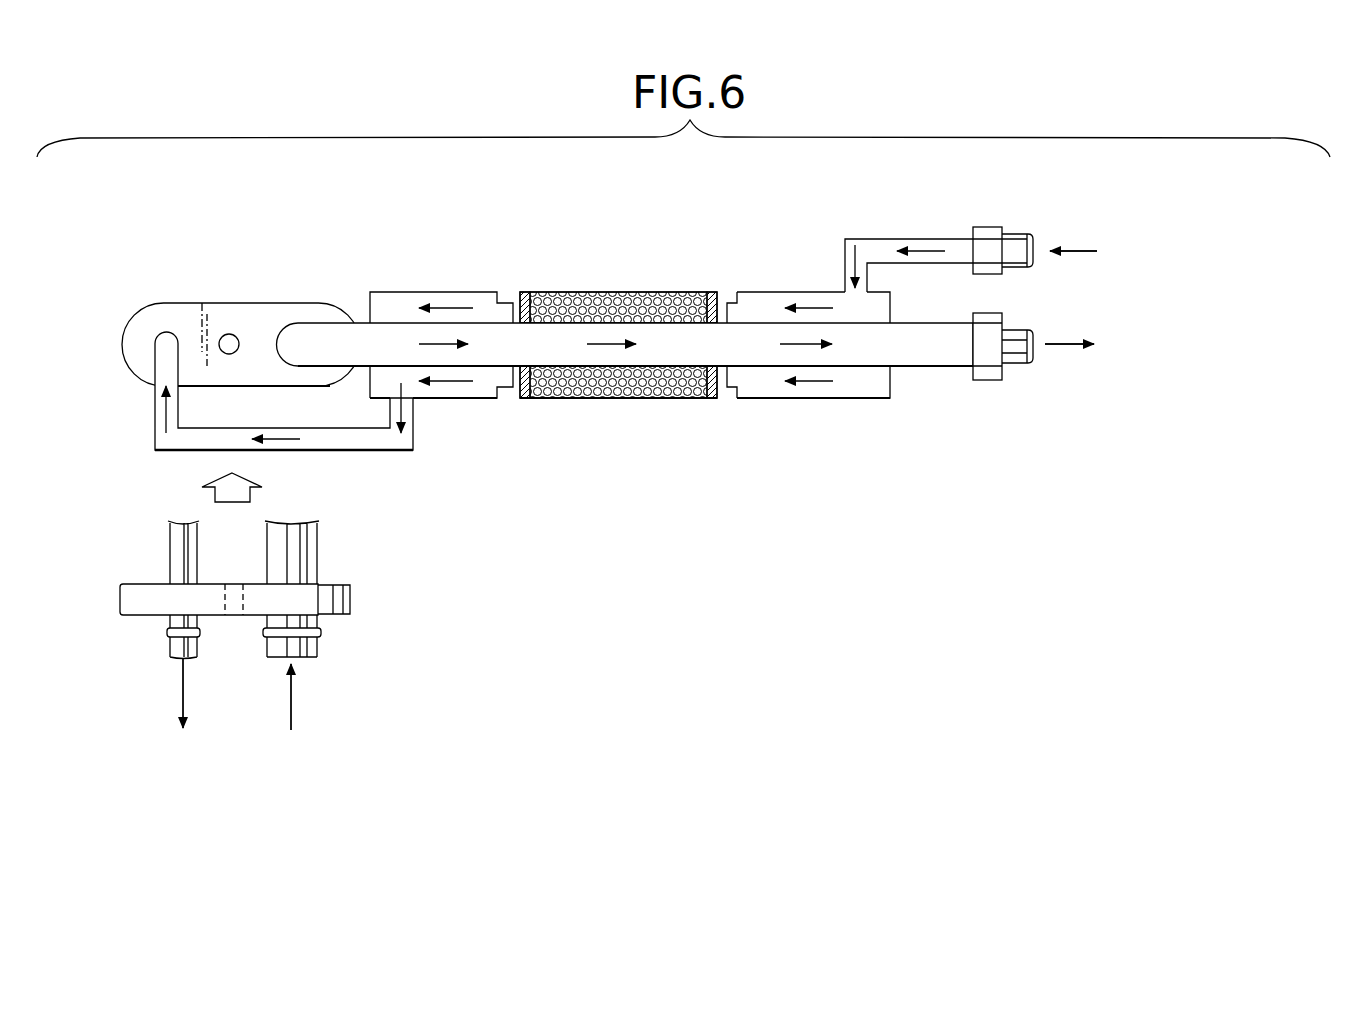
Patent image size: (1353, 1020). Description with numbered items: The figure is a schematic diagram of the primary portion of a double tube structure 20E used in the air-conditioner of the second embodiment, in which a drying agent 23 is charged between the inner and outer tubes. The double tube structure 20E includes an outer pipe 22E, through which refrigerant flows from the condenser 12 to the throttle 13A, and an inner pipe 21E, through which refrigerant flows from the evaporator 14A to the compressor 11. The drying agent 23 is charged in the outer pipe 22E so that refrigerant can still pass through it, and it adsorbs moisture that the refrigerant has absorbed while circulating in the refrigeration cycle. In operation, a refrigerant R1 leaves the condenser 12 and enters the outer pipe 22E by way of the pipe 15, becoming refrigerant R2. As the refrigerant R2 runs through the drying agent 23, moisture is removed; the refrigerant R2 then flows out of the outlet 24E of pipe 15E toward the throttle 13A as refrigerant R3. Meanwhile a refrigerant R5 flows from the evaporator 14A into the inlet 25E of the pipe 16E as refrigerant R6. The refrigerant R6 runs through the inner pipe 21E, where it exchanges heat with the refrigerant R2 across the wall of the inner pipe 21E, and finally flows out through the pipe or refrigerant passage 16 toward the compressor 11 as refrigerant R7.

The compressor 11 is at (1186, 343).
The condenser 12 is at (1179, 249).
The throttle 13A is at (166, 721).
The evaporator 14A is at (309, 740).
The pipe 15 is at (920, 238).
The pipe or refrigerant passage 16 is at (930, 368).
The pipe 15E is at (170, 553).
The pipe 16E is at (317, 551).
The double tube structure 20E is at (434, 283).
The inner pipe 21E is at (748, 350).
The outer pipe 22E is at (843, 385).
The drying agent 23 is at (636, 398).
The outlet 24E is at (175, 658).
The inlet 25E is at (302, 658).
The refrigerant R1 is at (1075, 248).
The refrigerant R2 is at (809, 305).
The refrigerant R3 is at (178, 703).
The refrigerant R5 is at (291, 698).
The refrigerant R6 is at (605, 340).
The refrigerant R7 is at (1066, 350).